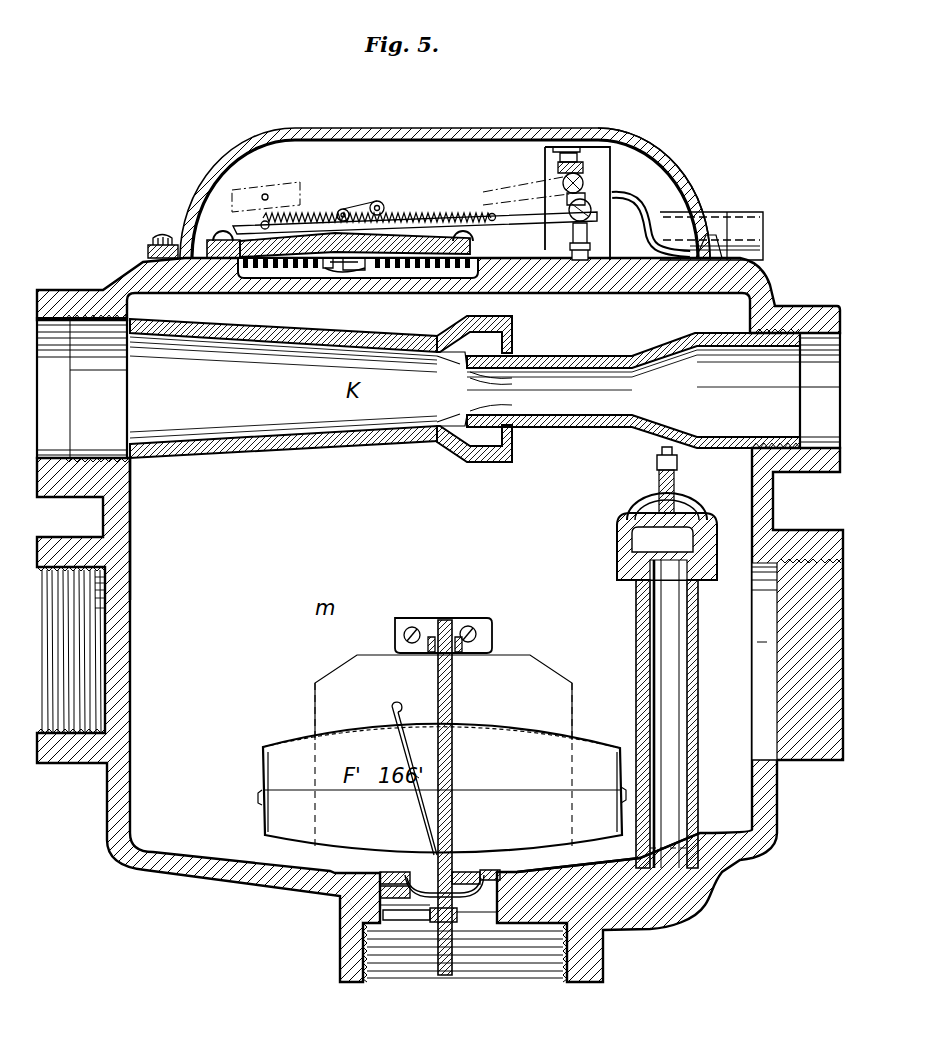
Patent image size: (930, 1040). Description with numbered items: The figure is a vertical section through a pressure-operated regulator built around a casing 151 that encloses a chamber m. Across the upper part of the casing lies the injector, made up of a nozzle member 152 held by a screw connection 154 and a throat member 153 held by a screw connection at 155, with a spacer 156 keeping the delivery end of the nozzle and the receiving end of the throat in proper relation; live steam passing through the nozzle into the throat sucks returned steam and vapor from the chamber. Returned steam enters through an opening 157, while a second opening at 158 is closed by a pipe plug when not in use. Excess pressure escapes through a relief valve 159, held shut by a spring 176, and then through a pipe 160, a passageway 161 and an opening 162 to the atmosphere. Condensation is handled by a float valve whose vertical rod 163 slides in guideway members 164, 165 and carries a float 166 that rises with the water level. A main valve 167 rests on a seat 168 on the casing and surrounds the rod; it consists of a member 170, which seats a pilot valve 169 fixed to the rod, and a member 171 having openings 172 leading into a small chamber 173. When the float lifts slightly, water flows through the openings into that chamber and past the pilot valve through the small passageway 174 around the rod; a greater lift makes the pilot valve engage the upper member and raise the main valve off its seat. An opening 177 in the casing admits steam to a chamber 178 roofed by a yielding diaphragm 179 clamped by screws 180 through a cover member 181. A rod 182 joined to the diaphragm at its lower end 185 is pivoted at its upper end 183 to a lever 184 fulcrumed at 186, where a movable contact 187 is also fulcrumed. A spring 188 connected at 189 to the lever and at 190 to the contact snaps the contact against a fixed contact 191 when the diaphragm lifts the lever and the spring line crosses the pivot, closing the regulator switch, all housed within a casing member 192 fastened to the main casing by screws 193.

The casing 151 is at (120, 752).
The nozzle member 152 is at (653, 390).
The throat member 153 is at (237, 388).
The screw connection 154 is at (783, 303).
The screw connection 155 is at (130, 477).
The spacer 156 is at (450, 458).
The opening 157 is at (106, 618).
The opening 158 is at (758, 614).
The relief valve 159 is at (630, 553).
The pipe 160 is at (670, 684).
The passageway 161 is at (608, 872).
The opening 162 is at (542, 967).
The rod 163 is at (446, 976).
The guideway member 164 is at (428, 916).
The guideway member 165 is at (463, 622).
The float 166 is at (263, 817).
The main valve 167 is at (455, 868).
The seat 168 is at (367, 880).
The pilot valve 169 is at (372, 905).
The main valve member 170 is at (456, 922).
The main valve member 171 is at (500, 873).
The openings 172 is at (458, 862).
The small chamber 173 is at (428, 872).
The passageway 174 is at (400, 920).
The spring 176 is at (657, 478).
The opening 177 is at (347, 288).
The chamber 178 is at (357, 291).
The yielding diaphragm 179 is at (222, 178).
The screws 180 is at (221, 240).
The cover member 181 is at (205, 255).
The rod 182 is at (372, 201).
The upper end 183 is at (344, 209).
The lever 184 is at (310, 220).
The lower end 185 is at (337, 263).
The fulcrum 186 is at (383, 207).
The movable contact 187 is at (513, 217).
The spring 188 is at (447, 213).
The connection point 189 is at (265, 221).
The connection point 190 is at (492, 213).
The fixed contact 191 is at (577, 173).
The casing member 192 is at (667, 173).
The screws 193 is at (153, 242).